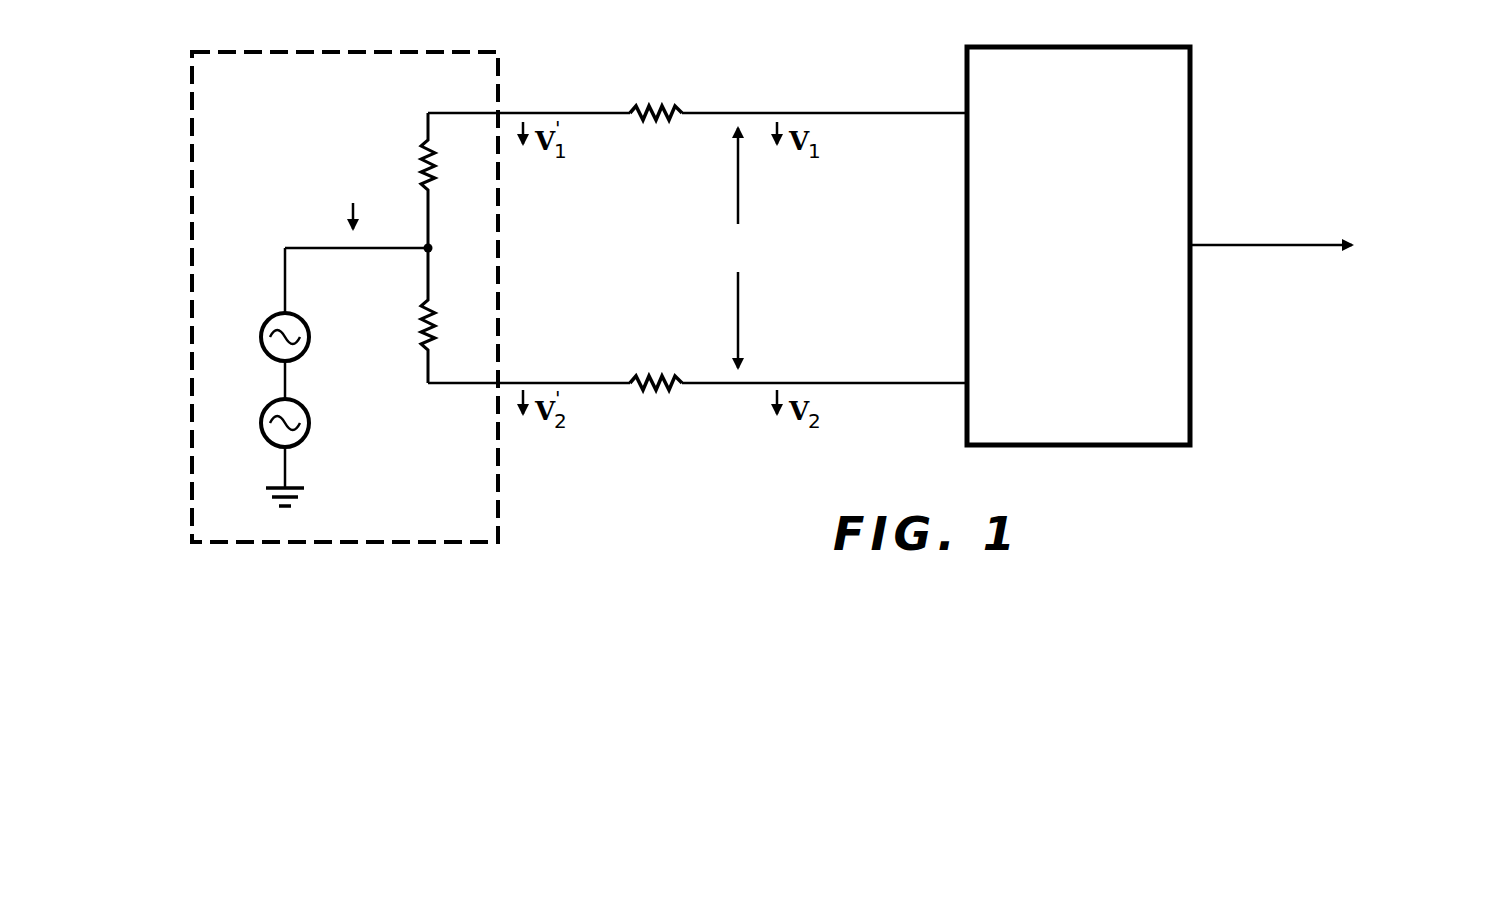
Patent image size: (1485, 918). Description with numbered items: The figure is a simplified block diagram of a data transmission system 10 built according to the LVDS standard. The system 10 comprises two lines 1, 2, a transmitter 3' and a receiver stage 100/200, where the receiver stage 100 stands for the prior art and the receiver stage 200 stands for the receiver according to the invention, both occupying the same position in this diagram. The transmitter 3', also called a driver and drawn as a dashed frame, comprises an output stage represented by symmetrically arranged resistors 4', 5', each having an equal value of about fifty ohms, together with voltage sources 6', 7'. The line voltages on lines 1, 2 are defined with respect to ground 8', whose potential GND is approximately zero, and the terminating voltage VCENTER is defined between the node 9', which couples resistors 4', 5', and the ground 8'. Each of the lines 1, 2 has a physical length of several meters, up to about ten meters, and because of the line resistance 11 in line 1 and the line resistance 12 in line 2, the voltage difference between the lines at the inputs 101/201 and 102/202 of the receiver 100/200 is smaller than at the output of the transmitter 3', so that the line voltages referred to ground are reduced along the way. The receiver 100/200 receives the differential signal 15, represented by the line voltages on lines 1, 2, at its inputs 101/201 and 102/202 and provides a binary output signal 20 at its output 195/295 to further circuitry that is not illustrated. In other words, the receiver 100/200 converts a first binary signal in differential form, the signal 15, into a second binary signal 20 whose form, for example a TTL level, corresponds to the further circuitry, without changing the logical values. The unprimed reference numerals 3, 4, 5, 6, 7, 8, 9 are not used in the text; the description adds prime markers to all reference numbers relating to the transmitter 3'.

The line 1 is at (589, 111).
The line 2 is at (589, 381).
The line resistance 11 is at (670, 104).
The line resistance 12 is at (670, 379).
The differential signal 15 is at (740, 248).
The data transmission system 10 is at (766, 545).
The binary output signal 20 is at (1192, 243).
The receiver stage 100 is at (1008, 246).
The receiver stage 200 is at (966, 246).
The input 101 is at (824, 89).
The input 201 is at (965, 109).
The input 102 is at (824, 360).
The input 202 is at (965, 379).
The output 195 is at (1329, 249).
The output 295 is at (1329, 249).
The transmitter 3 is at (370, 297).
The first divider resistor 4 is at (453, 180).
The second divider resistor 5 is at (453, 315).
The AC voltage source 6 is at (291, 355).
The DC voltage source 7 is at (292, 443).
The ground 8 is at (300, 501).
The center node 9 is at (359, 255).
The transmitter 3' is at (370, 297).
The resistor 4' is at (453, 180).
The resistor 5' is at (453, 315).
The voltage source 6' is at (291, 355).
The voltage source 7' is at (292, 443).
The ground 8' is at (300, 501).
The node 9' is at (359, 255).